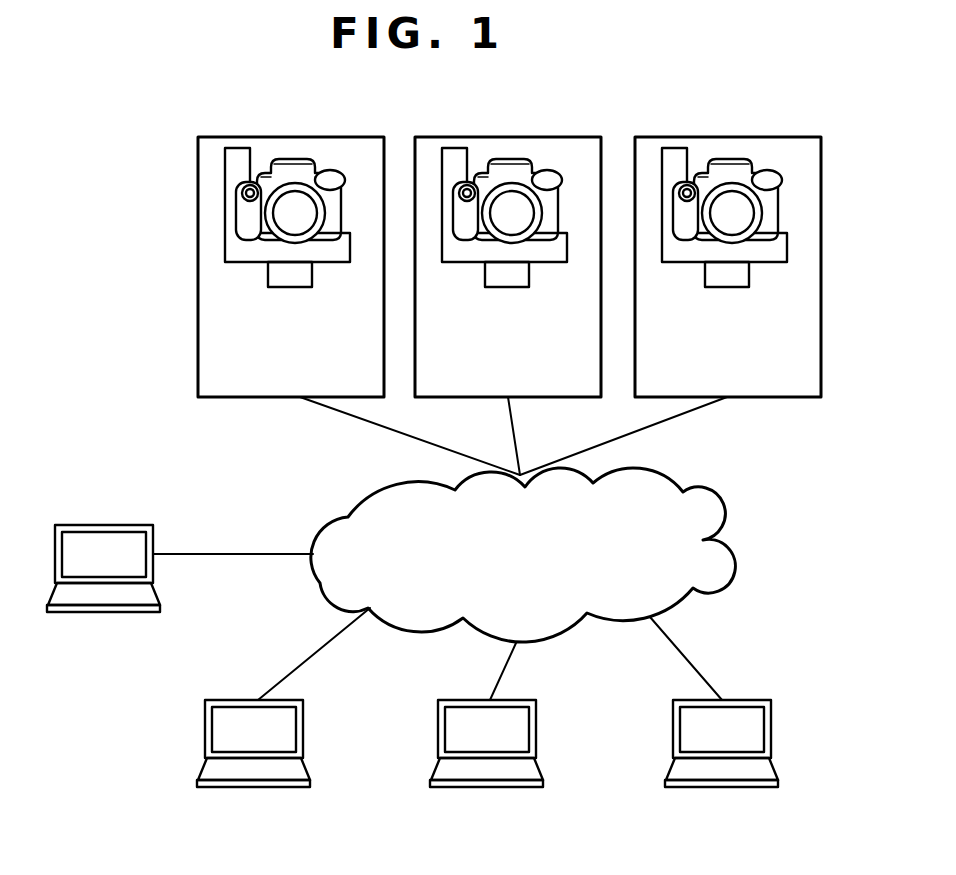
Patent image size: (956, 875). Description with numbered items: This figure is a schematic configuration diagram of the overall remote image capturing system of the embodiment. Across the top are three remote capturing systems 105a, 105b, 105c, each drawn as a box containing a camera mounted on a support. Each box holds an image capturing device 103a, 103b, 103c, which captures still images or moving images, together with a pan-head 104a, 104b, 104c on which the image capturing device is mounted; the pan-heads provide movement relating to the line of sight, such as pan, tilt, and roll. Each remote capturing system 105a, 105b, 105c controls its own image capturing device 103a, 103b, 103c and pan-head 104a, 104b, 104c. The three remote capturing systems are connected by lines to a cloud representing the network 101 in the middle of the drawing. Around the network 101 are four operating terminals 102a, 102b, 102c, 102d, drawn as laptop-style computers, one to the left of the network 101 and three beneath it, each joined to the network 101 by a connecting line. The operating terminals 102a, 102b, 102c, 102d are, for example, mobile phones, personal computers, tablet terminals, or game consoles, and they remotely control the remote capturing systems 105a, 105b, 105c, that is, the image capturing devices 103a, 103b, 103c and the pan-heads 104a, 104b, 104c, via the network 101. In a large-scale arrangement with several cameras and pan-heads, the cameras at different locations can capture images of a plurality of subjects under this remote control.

The network 101 is at (722, 512).
The operating terminal 102a is at (103, 546).
The operating terminal 102b is at (253, 768).
The operating terminal 102c is at (486, 768).
The operating terminal 102d is at (721, 768).
The image capturing device 103a is at (301, 166).
The image capturing device 103b is at (518, 166).
The image capturing device 103c is at (738, 166).
The pan-head 104a is at (280, 188).
The pan-head 104b is at (497, 188).
The pan-head 104c is at (717, 188).
The remote capturing system 105a is at (246, 243).
The remote capturing system 105b is at (508, 267).
The remote capturing system 105c is at (728, 267).